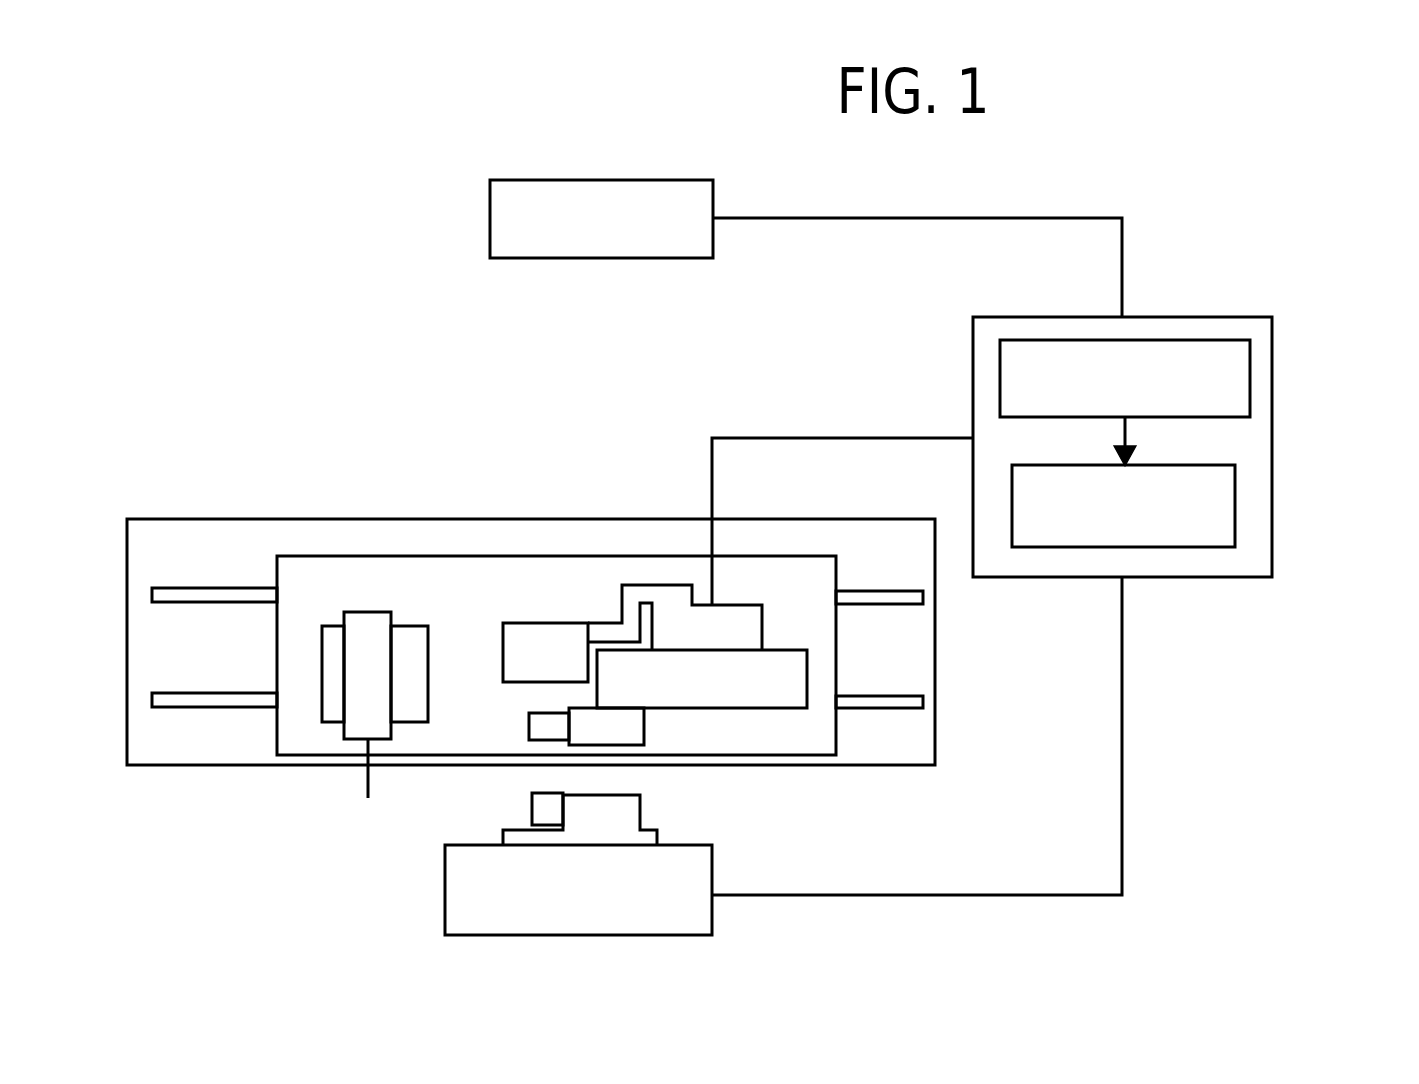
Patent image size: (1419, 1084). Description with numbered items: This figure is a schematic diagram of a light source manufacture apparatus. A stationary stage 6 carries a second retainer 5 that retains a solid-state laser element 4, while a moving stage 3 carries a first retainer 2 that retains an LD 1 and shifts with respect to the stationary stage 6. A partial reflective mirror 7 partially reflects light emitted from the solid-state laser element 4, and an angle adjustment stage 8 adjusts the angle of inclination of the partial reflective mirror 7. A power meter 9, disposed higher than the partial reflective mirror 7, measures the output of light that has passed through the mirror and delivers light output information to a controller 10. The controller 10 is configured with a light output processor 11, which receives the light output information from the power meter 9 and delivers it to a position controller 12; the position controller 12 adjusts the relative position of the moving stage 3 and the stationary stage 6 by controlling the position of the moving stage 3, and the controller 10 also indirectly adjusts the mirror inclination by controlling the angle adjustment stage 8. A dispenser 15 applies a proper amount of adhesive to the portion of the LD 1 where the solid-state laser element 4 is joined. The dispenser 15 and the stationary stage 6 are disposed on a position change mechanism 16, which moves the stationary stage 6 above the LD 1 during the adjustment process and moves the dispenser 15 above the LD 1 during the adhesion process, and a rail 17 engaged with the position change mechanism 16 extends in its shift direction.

The LD 1 is at (532, 810).
The first retainer 2 is at (640, 810).
The moving stage 3 is at (445, 888).
The solid-state laser element 4 is at (538, 722).
The second retainer 5 is at (645, 723).
The stationary stage 6 is at (777, 712).
The partial reflective mirror 7 is at (519, 623).
The angle adjustment stage 8 is at (637, 585).
The power meter 9 is at (490, 228).
The controller 10 is at (1195, 457).
The light output processor 11 is at (1250, 375).
The position controller 12 is at (1235, 500).
The dispenser 15 is at (342, 731).
The position change mechanism 16 is at (302, 572).
The rail 17 is at (876, 591).